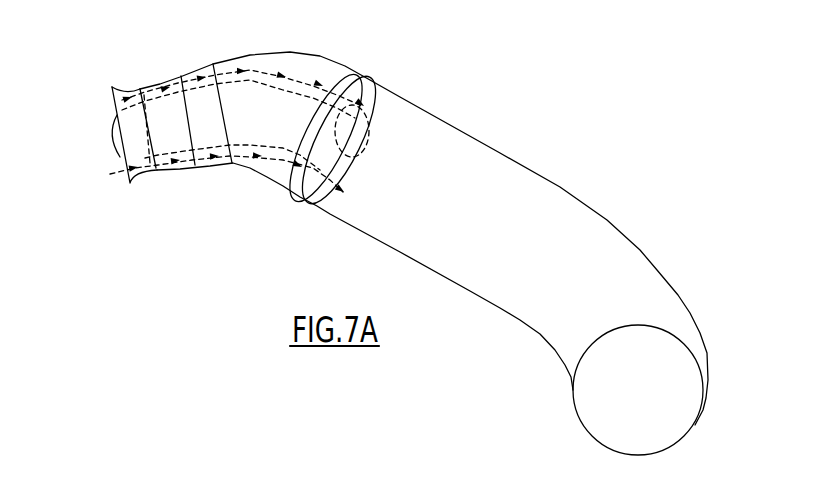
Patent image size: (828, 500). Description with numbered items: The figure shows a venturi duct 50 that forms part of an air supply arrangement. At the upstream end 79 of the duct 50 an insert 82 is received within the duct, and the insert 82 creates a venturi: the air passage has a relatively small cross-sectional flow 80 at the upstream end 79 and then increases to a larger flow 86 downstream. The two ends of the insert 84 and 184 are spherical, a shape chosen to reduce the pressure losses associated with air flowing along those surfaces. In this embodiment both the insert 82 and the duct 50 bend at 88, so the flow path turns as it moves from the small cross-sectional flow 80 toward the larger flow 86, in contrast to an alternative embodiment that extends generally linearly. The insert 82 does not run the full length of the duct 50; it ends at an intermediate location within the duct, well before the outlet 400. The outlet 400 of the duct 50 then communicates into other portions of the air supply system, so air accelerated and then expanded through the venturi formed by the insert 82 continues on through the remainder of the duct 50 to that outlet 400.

The duct 50 is at (424, 127).
The outlet 400 is at (665, 447).
The upstream end 79 is at (111, 85).
The relatively small cross-sectional flow 80 is at (110, 102).
The insert end 84 is at (114, 134).
The insert 82 is at (184, 116).
The bend 88 is at (277, 82).
The larger flow 86 is at (318, 203).
The insert end 184 is at (368, 145).